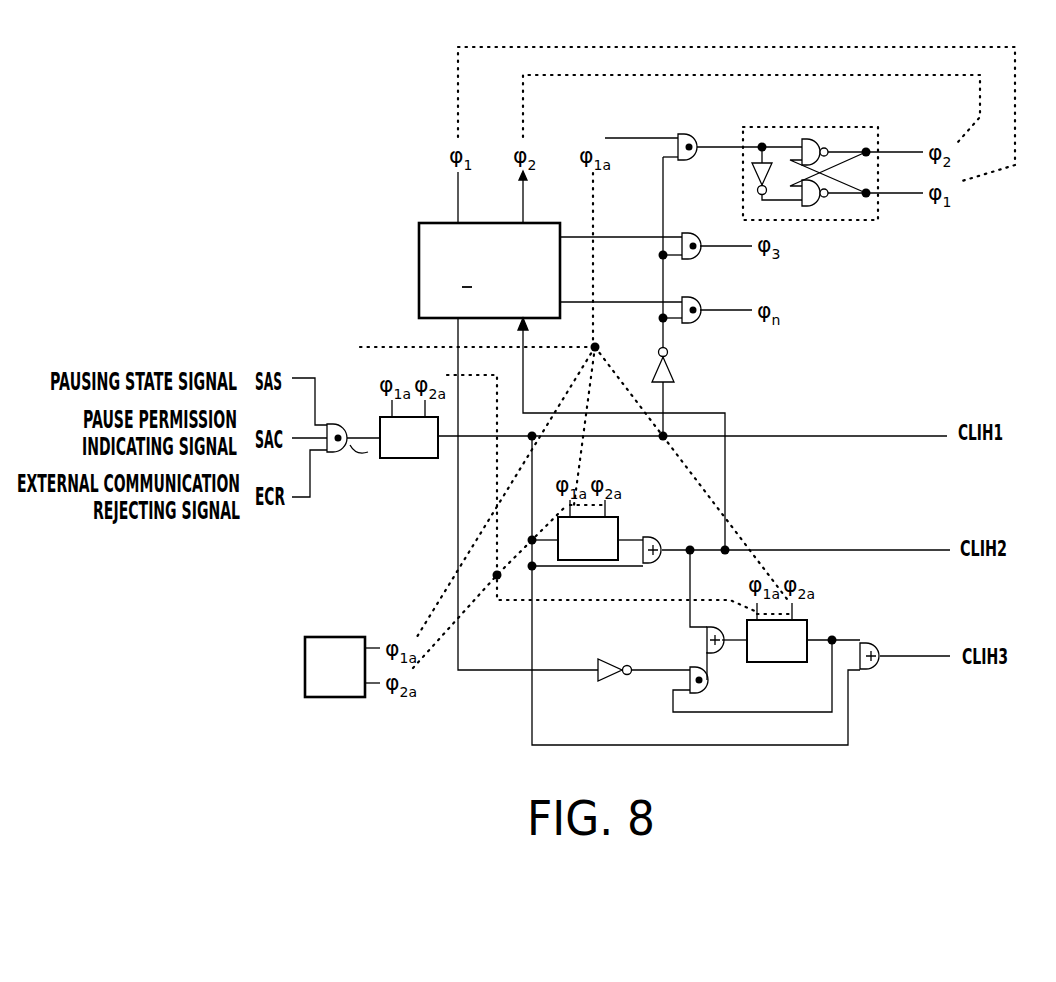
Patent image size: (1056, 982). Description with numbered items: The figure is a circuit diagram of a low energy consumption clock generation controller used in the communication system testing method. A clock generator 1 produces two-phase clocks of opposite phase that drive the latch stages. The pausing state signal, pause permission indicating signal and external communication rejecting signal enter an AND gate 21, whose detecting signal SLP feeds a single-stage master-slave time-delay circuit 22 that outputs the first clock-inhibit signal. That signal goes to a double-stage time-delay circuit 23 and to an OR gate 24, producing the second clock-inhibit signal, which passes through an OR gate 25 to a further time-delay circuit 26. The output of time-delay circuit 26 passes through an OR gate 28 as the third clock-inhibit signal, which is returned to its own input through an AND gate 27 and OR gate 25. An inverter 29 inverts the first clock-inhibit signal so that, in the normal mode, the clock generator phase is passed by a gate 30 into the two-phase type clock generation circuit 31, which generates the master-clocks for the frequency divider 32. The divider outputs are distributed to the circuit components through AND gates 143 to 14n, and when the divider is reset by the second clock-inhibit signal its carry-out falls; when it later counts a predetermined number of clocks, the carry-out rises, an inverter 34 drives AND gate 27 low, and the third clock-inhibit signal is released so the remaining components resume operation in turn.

The clock generator 1 is at (338, 637).
The AND gate 21 is at (341, 422).
The time-delay circuit 22 is at (405, 459).
The time-delay circuit 23 is at (620, 522).
The OR gate 24 is at (660, 532).
The OR gate 25 is at (712, 624).
The time-delay circuit 26 is at (808, 622).
The AND gate 27 is at (710, 689).
The OR gate 28 is at (874, 670).
The inverter 29 is at (677, 372).
The AND gate 30 is at (690, 133).
The two-phase type clock generation circuit 31 is at (872, 124).
The frequency divider 32 is at (418, 268).
The inverter 34 is at (612, 682).
The AND gate 143 is at (700, 234).
The AND gate 14n is at (696, 323).